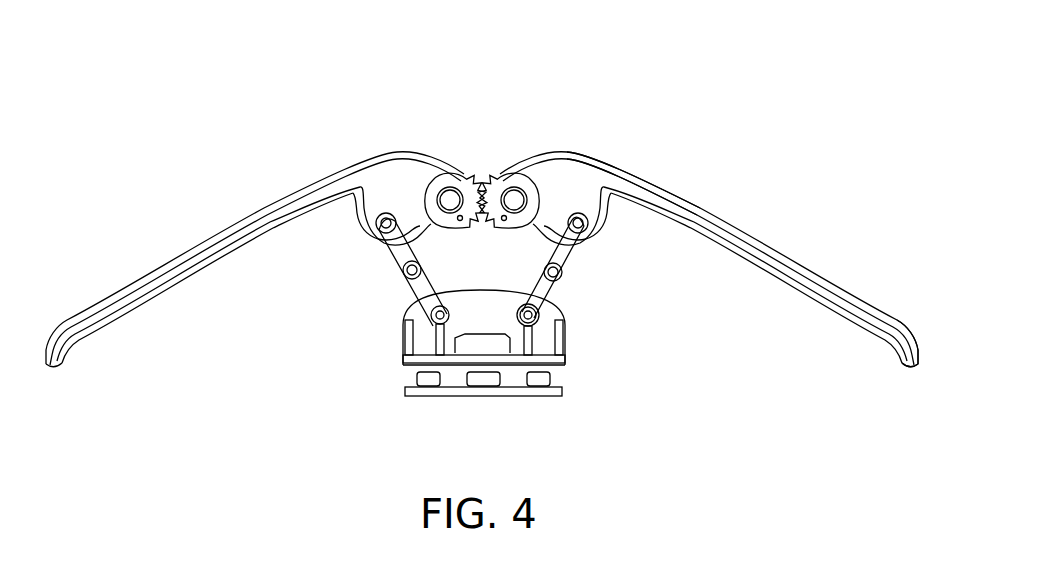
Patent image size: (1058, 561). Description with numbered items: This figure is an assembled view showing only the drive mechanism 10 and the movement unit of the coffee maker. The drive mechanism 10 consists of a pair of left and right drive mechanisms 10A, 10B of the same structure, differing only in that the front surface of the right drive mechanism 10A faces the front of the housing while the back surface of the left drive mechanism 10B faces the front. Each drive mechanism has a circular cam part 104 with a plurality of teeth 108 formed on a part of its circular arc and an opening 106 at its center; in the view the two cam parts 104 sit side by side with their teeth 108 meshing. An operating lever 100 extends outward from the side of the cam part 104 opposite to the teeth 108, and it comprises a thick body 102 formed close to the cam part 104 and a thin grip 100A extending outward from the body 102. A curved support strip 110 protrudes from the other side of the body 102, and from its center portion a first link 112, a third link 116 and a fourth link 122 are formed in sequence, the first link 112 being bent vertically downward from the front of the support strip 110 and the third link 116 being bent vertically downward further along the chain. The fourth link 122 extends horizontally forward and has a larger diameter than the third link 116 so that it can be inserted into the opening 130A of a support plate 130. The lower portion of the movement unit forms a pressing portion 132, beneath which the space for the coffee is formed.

The drive mechanism 10 is at (436, 88).
The right drive mechanism 10A is at (729, 245).
The left drive mechanism 10B is at (231, 214).
The operating lever 100 is at (783, 258).
The grip 100A is at (878, 320).
The body 102 is at (588, 178).
The cam part 104 is at (526, 123).
The opening 106 is at (516, 200).
The teeth 108 is at (492, 176).
The support strip 110 is at (556, 232).
The first link 112 is at (562, 255).
The third link 116 is at (556, 292).
The fourth link 122 is at (538, 322).
The support plate 130 is at (473, 303).
The opening 130A is at (506, 338).
The pressing portion 132 is at (447, 383).